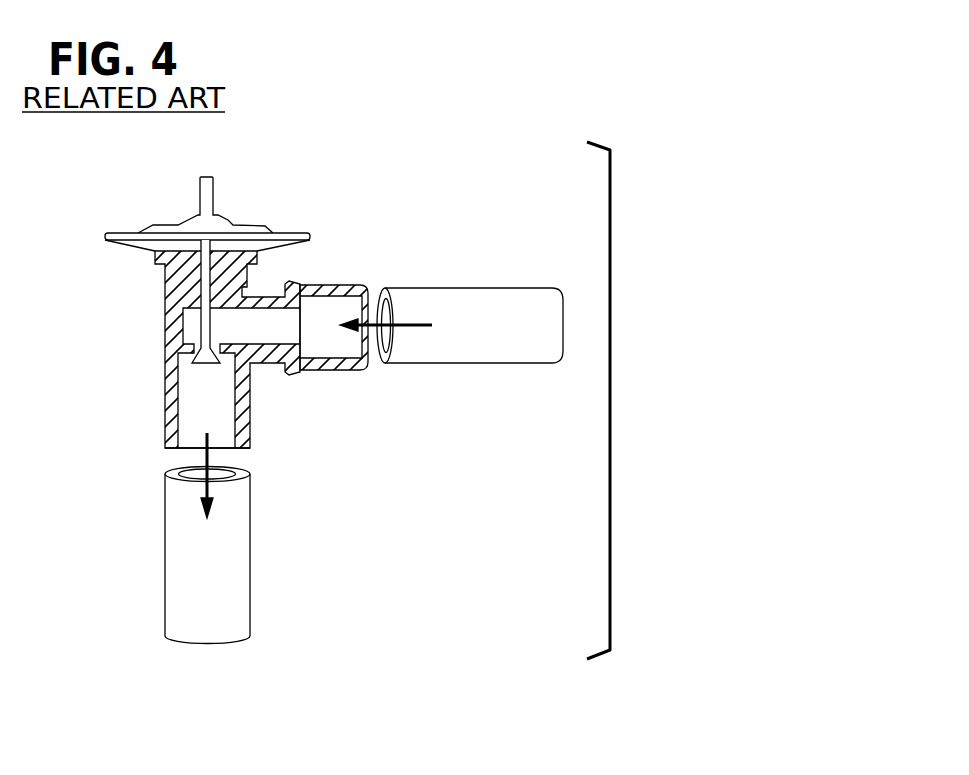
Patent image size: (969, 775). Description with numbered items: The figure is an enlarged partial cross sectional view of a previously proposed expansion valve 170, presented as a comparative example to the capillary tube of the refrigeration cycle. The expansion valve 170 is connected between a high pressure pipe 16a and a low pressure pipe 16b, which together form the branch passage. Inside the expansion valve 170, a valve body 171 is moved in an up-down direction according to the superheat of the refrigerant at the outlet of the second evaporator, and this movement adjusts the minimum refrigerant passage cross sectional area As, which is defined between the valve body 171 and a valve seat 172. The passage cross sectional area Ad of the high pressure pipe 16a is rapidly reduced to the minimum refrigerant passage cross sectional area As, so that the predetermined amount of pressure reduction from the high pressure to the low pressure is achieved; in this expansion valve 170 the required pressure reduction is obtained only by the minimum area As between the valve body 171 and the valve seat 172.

The expansion valve 170 is at (318, 280).
The valve body 171 is at (205, 368).
The valve seat 172 is at (193, 350).
The high pressure pipe 16a is at (491, 288).
The low pressure pipe 16b is at (250, 539).
The minimum refrigerant passage cross sectional area As is at (219, 350).
The passage cross sectional area of the high pressure pipe Ad is at (390, 335).